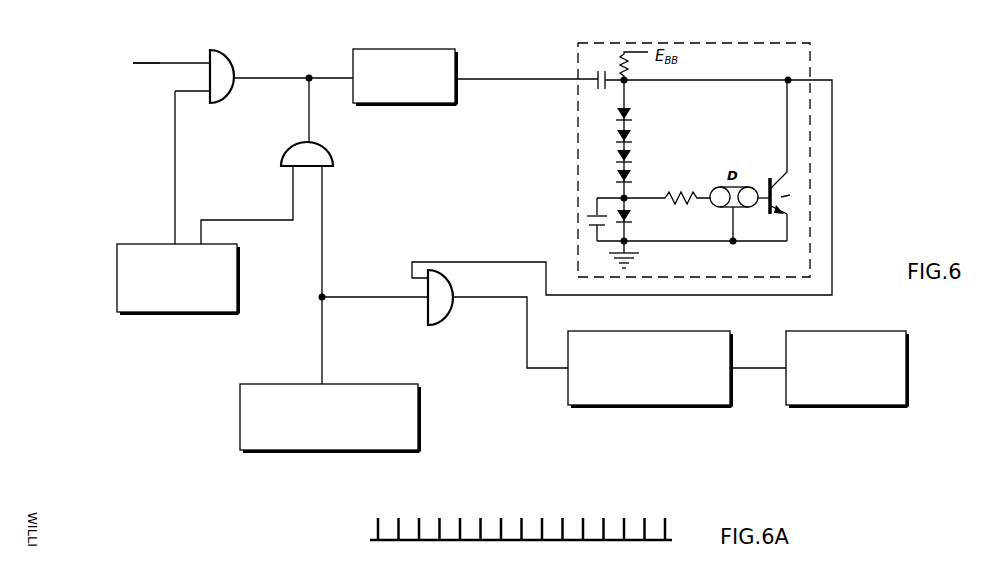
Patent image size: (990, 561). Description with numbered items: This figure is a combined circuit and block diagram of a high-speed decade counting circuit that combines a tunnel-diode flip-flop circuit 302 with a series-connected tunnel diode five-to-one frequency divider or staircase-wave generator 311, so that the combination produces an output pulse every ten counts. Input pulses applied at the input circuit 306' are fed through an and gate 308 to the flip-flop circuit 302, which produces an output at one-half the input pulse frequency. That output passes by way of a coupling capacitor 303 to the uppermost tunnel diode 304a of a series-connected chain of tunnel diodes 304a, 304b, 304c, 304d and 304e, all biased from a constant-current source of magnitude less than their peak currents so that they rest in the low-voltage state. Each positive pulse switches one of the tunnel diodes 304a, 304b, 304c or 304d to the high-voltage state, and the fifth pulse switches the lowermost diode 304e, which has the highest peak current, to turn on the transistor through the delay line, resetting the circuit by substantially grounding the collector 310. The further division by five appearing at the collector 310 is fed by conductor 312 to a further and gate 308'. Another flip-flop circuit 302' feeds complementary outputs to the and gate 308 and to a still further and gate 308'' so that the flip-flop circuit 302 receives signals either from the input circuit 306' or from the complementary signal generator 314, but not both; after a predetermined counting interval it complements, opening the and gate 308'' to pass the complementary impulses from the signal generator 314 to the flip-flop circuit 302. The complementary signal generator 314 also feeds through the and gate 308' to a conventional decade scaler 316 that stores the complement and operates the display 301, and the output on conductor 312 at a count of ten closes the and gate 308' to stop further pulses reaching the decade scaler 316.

The display 301 is at (808, 406).
The tunnel-diode flip-flop circuit 302 is at (429, 87).
The flip-flop circuit 302' is at (203, 292).
The coupling capacitor 303 is at (598, 74).
The uppermost tunnel diode 304a is at (632, 114).
The tunnel diode 304b is at (632, 136).
The tunnel diode 304c is at (632, 156).
The tunnel diode 304d is at (632, 176).
The lowermost tunnel diode 304e is at (634, 214).
The input circuit 306' is at (155, 46).
The and gate 308 is at (243, 66).
The and gate 308' is at (445, 317).
The and gate 308'' is at (301, 259).
The collector of the transistor 310 is at (781, 183).
The series-connected tunnel diode five-to-one frequency divider or staircase-wave ge 311 is at (811, 60).
The conductor 312 is at (833, 158).
The complementary signal generator 314 is at (421, 433).
The conventional decade scaler 316 is at (679, 406).